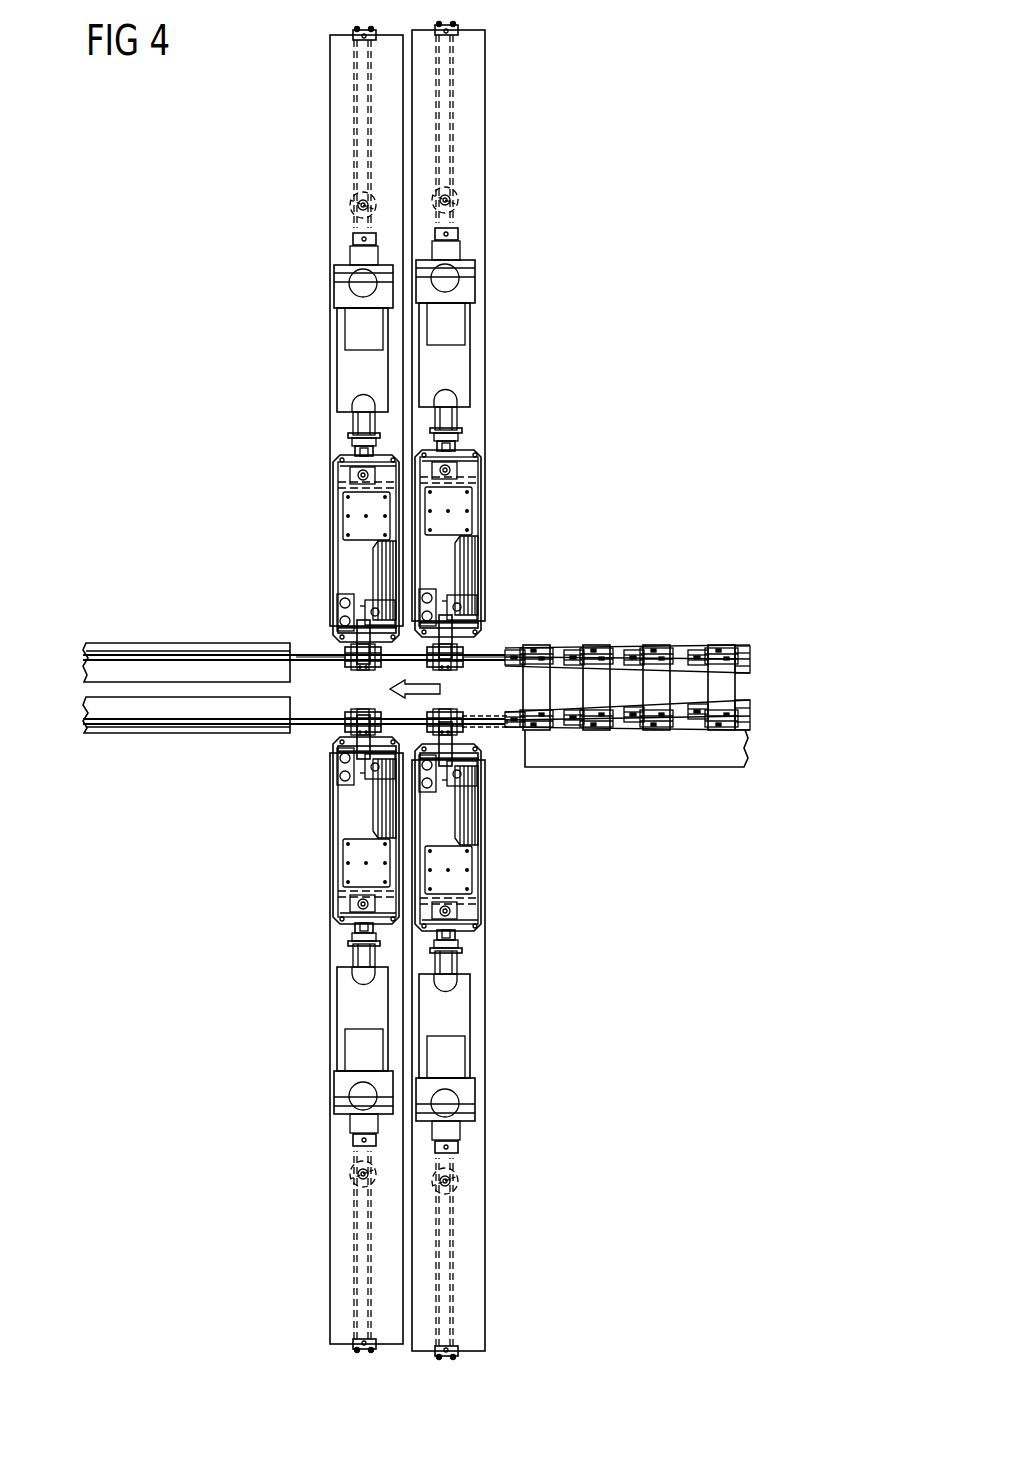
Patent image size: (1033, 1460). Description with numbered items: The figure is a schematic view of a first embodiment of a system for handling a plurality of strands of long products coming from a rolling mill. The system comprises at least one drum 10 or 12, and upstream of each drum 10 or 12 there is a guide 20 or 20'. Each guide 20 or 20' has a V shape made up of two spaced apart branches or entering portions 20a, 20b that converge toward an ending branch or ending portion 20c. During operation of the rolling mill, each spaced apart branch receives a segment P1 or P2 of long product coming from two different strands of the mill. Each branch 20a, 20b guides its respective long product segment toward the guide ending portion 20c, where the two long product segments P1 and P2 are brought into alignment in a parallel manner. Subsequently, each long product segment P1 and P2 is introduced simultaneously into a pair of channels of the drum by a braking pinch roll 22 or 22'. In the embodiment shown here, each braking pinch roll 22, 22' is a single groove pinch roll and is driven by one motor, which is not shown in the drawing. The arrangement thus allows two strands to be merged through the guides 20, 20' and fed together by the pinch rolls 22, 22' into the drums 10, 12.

The drum 10 is at (183, 745).
The drum 12 is at (172, 622).
The guide 20 is at (661, 646).
The guide 20' is at (627, 762).
The entering portion 20a is at (718, 650).
The entering portion 20b is at (741, 678).
The ending portion 20c is at (556, 650).
The braking pinch roll 22 is at (473, 676).
The braking pinch roll 22' is at (338, 676).
The long product segment P1 is at (488, 648).
The long product segment P2 is at (303, 652).